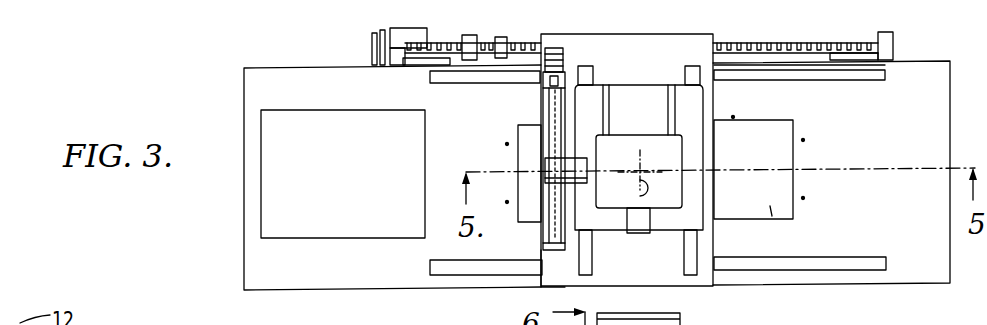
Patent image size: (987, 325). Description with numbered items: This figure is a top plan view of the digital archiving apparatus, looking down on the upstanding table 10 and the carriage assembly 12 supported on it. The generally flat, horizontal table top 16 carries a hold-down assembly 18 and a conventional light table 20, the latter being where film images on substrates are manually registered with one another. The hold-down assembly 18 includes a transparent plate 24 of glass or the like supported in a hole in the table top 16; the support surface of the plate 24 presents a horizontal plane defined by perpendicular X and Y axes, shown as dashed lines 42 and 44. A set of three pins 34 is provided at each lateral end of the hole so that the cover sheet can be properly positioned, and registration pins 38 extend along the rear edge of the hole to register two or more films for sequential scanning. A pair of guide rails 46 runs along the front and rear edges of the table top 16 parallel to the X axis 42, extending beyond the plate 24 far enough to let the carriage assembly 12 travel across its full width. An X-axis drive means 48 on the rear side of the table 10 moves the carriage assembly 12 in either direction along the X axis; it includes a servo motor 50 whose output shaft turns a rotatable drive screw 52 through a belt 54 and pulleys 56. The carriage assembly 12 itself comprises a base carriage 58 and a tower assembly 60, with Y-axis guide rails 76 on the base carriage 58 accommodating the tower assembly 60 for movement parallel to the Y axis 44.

The upstanding table 10 is at (242, 177).
The carriage assembly 12 is at (542, 285).
The table top 16 is at (365, 290).
The hold-down assembly 18 is at (810, 158).
The light table 20 is at (318, 230).
The transparent plate 24 is at (770, 210).
The pins 34 is at (805, 199).
The registration pins 38 is at (770, 118).
The X axis 42 is at (641, 171).
The Y axis 44 is at (637, 196).
The guide rails 46 is at (884, 70).
The X-axis drive means 48 is at (481, 60).
The servo motor 50 is at (414, 36).
The drive screw 52 is at (847, 38).
The belt 54 is at (375, 27).
The pulleys 56 is at (372, 50).
The base carriage 58 is at (703, 284).
The tower assembly 60 is at (636, 84).
The Y-axis guide rails 76 is at (685, 261).